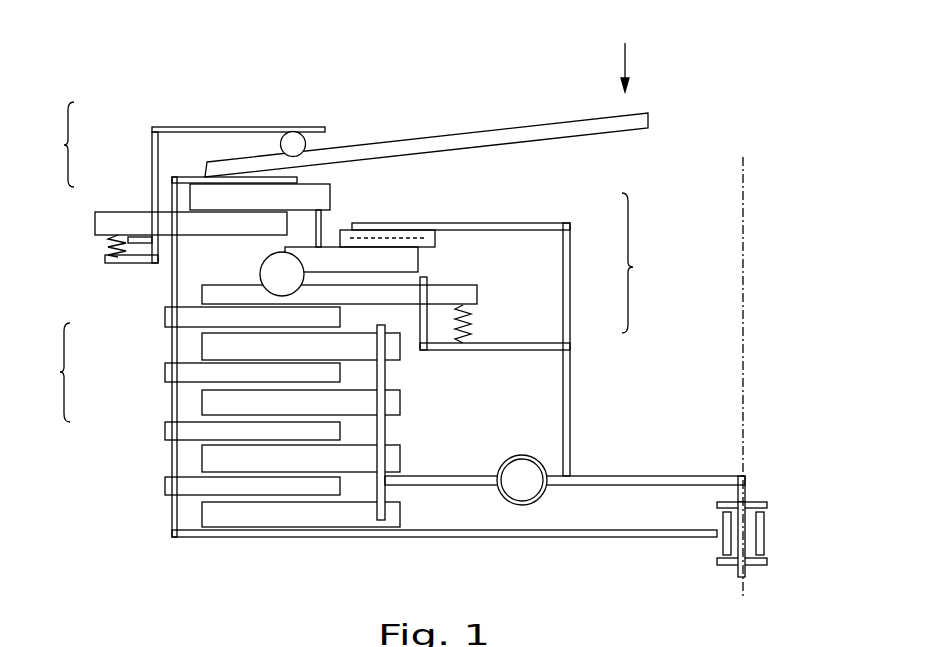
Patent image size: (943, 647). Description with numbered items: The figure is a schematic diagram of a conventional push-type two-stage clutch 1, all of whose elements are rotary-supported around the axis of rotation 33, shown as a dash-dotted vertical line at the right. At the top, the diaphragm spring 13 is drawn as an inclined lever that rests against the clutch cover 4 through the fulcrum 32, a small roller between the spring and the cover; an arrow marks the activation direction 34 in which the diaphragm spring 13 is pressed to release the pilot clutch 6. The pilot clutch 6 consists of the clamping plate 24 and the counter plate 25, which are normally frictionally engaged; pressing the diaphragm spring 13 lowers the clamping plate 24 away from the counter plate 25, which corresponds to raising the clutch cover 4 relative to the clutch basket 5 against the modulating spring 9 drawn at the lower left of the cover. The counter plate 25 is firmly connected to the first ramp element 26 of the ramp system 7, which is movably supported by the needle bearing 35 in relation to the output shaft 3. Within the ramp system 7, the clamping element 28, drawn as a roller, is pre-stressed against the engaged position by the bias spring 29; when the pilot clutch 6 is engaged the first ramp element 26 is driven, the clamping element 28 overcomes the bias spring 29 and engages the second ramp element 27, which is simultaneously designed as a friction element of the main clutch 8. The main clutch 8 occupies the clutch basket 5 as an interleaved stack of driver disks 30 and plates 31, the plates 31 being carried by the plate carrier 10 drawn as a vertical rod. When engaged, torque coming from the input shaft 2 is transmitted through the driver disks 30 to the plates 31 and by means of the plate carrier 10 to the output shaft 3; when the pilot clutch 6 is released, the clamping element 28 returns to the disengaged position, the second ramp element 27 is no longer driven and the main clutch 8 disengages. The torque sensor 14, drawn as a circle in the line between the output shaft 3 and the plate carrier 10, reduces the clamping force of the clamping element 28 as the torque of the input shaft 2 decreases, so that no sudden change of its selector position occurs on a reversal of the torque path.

The two-stage clutch 1 is at (140, 66).
The input shaft 2 is at (767, 537).
The output shaft 3 is at (748, 490).
The clutch cover 4 is at (217, 127).
The clutch basket 5 is at (173, 512).
The pilot clutch 6 is at (60, 144).
The ramp system 7 is at (505, 334).
The main clutch 8 is at (54, 372).
The modulating spring 9 is at (108, 245).
The plate carrier 10 is at (384, 492).
The diaphragm spring 13 is at (440, 143).
The torque sensor 14 is at (523, 487).
The clamping plate 24 is at (133, 211).
The counter plate 25 is at (204, 198).
The first ramp element 26 is at (408, 255).
The second ramp element 27 is at (465, 297).
The clamping element 28 is at (284, 277).
The bias spring 29 is at (467, 323).
The driver disks 30 is at (167, 318).
The plates 31 is at (217, 407).
The fulcrum 32 is at (293, 130).
The axis of rotation 33 is at (743, 280).
The activation direction 34 is at (625, 62).
The needle bearing 35 is at (415, 226).